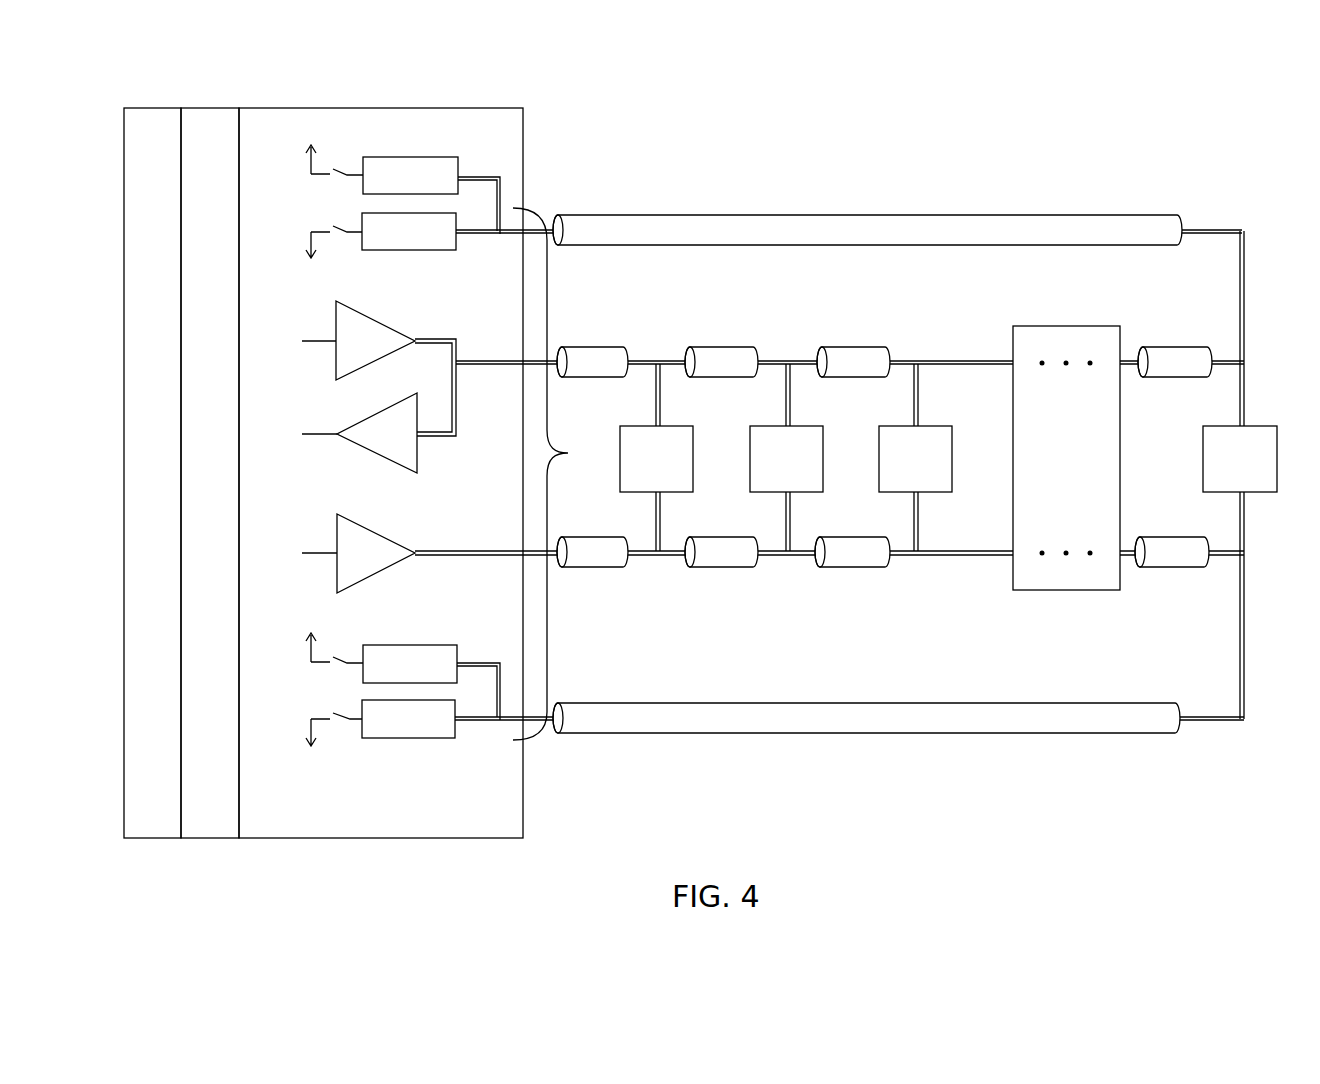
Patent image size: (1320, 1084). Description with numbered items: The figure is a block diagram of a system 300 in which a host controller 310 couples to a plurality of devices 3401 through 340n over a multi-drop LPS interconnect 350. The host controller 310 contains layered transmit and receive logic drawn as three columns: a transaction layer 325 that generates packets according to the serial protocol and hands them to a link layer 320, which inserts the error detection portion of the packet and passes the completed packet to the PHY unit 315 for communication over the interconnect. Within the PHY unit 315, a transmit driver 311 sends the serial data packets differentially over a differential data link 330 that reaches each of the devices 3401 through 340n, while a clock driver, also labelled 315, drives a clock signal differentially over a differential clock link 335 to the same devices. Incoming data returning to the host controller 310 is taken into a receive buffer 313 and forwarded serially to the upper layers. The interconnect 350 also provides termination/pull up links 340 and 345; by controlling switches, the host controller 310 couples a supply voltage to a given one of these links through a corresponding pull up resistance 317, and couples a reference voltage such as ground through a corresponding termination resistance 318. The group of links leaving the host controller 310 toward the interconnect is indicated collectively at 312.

The system 300 is at (178, 83).
The host controller 310 is at (341, 487).
The transaction layer 325 is at (170, 138).
The link layer 320 is at (228, 138).
The PHY unit 315 is at (287, 138).
The pull up resistance 317 is at (397, 157).
The termination resistance 318 is at (397, 250).
The transmit driver 311 is at (370, 318).
The receive buffer 313 is at (375, 455).
The cable bundle 312 is at (549, 440).
The differential data link 330 is at (640, 360).
The differential clock link 335 is at (639, 555).
The termination/pull up link 340 is at (675, 215).
The termination/pull up link 345 is at (675, 703).
The device 3401 is at (693, 459).
The device 340n is at (1262, 426).
The LPS interconnect 350 is at (1115, 179).